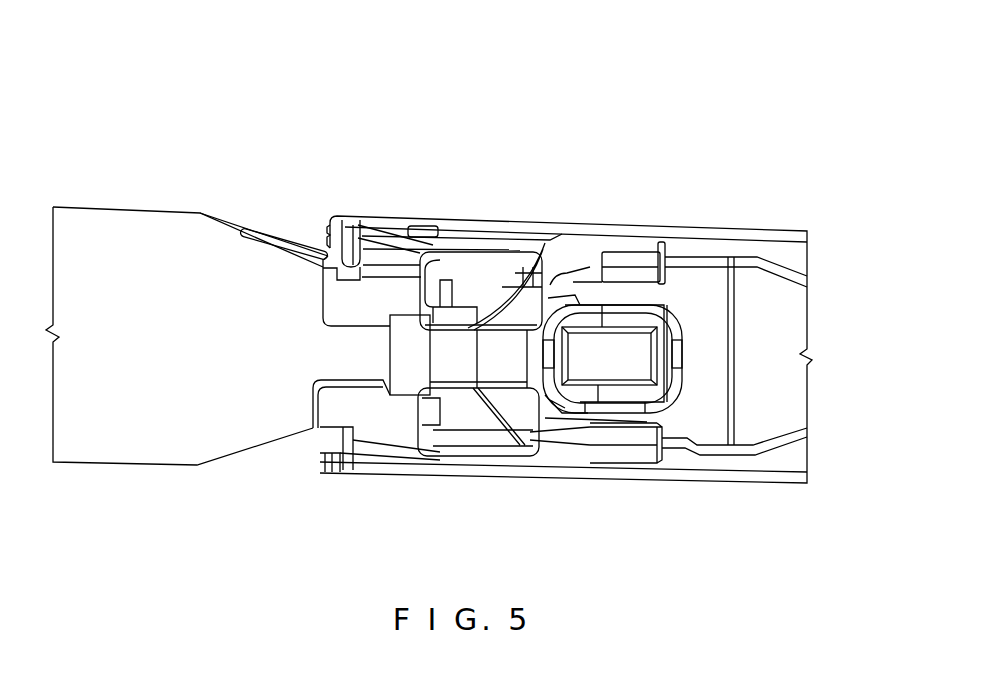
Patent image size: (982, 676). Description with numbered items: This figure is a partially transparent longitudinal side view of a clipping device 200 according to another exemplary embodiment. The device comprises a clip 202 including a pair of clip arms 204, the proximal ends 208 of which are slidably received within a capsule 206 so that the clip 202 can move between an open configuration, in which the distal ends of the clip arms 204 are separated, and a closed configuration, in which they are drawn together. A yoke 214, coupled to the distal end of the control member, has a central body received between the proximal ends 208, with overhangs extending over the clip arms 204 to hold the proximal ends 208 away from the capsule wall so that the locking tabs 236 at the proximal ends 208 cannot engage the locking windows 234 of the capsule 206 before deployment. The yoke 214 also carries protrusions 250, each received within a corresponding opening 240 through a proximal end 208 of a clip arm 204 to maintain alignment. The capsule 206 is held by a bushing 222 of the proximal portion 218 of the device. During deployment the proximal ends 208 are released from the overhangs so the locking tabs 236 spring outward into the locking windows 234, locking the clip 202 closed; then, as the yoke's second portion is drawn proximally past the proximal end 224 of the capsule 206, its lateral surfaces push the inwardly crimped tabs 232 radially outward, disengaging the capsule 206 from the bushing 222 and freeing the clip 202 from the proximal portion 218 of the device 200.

The clipping device 200 is at (401, 124).
The clip 202 is at (668, 186).
The clip arms 204 is at (768, 410).
The capsule 206 is at (747, 232).
The proximal ends 208 is at (688, 288).
The yoke 214 is at (567, 262).
The proximal portion 218 is at (94, 163).
The bushing 222 is at (137, 247).
The proximal end 224 is at (362, 215).
The crimped tabs 232 is at (327, 240).
The locking windows 234 is at (473, 277).
The locking tabs 236 is at (518, 253).
The opening 240 is at (630, 408).
The protrusions 250 is at (606, 347).